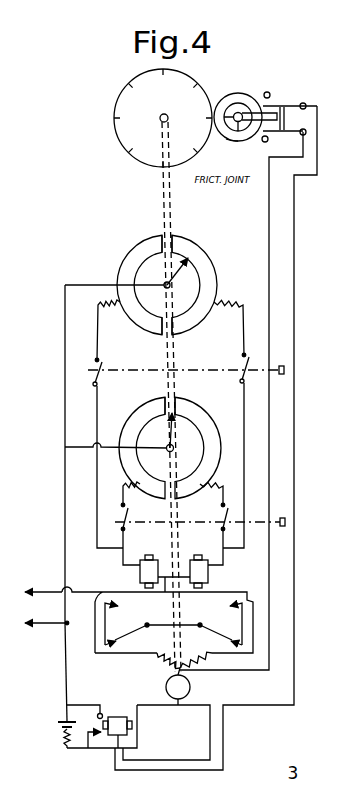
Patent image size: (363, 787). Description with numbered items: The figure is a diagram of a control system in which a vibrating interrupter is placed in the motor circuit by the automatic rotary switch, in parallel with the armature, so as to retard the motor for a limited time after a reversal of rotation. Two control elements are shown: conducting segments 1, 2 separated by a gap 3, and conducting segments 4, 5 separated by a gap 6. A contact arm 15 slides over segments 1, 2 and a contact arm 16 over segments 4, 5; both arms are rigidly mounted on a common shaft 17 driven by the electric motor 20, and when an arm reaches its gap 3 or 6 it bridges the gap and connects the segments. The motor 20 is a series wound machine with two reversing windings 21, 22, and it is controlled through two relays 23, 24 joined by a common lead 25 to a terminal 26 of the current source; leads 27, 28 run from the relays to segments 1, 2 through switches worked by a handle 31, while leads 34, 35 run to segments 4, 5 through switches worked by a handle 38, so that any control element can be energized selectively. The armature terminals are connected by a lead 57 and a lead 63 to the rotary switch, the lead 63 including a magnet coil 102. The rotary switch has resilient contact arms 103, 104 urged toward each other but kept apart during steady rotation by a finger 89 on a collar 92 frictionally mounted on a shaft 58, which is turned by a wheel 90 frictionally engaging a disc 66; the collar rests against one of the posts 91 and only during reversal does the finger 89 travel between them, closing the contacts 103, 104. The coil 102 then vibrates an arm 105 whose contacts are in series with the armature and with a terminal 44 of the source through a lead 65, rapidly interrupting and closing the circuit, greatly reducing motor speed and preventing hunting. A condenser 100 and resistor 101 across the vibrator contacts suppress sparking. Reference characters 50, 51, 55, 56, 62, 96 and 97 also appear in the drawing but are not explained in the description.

The conducting segment 1 is at (123, 465).
The conducting segment 2 is at (214, 442).
The gap 3 is at (177, 406).
The conducting segment 4 is at (133, 252).
The conducting segment 5 is at (211, 258).
The gap 6 is at (173, 236).
The contact arm 15 is at (182, 432).
The contact arm 16 is at (180, 277).
The common shaft 17 is at (177, 338).
The electric motor 20 is at (191, 688).
The reversing winding 21 is at (152, 656).
The reversing winding 22 is at (197, 661).
The relay 23 is at (145, 554).
The relay 24 is at (195, 554).
The common lead 25 is at (104, 593).
The terminal of source of current 26 is at (41, 576).
The lead 27 is at (123, 563).
The lead 28 is at (223, 563).
The handle 31 is at (285, 522).
The lead 34 is at (97, 497).
The lead 35 is at (246, 475).
The handle 38 is at (284, 370).
The terminal of source of current 44 is at (45, 636).
The conductor to lower pointer 50 is at (76, 447).
The common conductor 51 is at (65, 485).
The left motor contact 55 is at (113, 646).
The right motor contact 56 is at (234, 646).
The lead 57 is at (269, 214).
The shaft 58 is at (243, 104).
The reversing switch blade 62 is at (168, 626).
The lead 63 is at (294, 200).
The lead 65 is at (67, 678).
The disc 66 is at (115, 105).
The finger or lug 89 is at (273, 108).
The wheel 90 is at (226, 138).
The posts or stops 91 is at (268, 92).
The collar 92 is at (232, 94).
The left upper contact 96 is at (123, 612).
The right upper contact 97 is at (240, 606).
The condenser 100 is at (58, 723).
The resistor 101 is at (62, 740).
The magnet coil 102 is at (113, 716).
The resilient contact arm 103 is at (305, 133).
The resilient contact arm 104 is at (305, 104).
The vibrating arm 105 is at (100, 724).